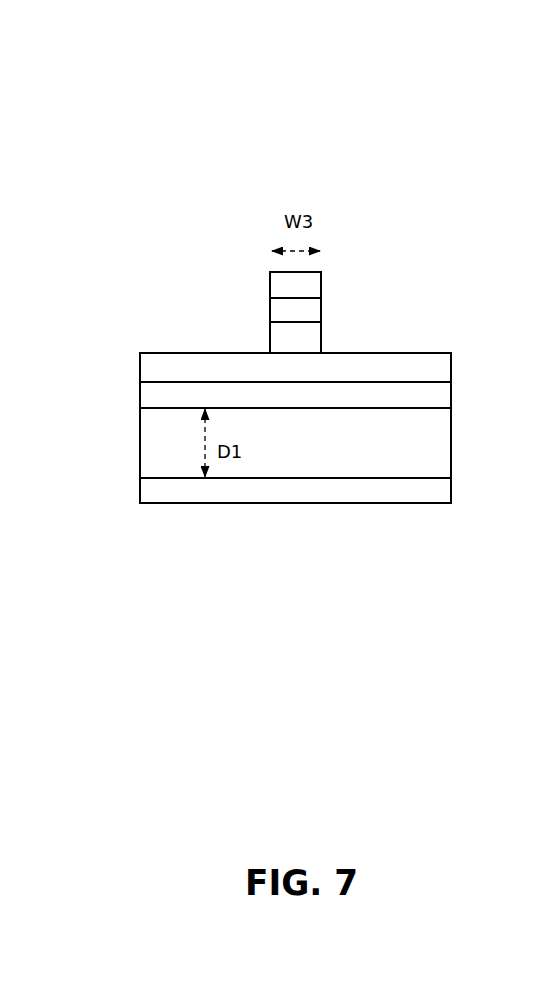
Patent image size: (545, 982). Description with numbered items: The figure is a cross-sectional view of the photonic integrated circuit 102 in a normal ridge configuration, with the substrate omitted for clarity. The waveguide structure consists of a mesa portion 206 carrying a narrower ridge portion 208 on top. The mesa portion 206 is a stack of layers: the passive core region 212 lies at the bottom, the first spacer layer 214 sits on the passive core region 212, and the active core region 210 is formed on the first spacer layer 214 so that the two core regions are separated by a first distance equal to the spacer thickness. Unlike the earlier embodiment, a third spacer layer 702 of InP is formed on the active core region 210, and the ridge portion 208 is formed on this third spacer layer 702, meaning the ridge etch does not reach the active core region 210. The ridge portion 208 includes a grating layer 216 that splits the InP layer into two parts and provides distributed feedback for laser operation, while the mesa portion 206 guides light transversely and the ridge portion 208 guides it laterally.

The photonic integrated circuit 102 is at (63, 80).
The mesa portion 206 is at (398, 351).
The ridge portion 208 is at (323, 284).
The grating layer 216 is at (289, 316).
The third spacer layer 702 is at (215, 373).
The active core region 210 is at (175, 400).
The first spacer layer 214 is at (338, 470).
The passive core region 212 is at (238, 493).